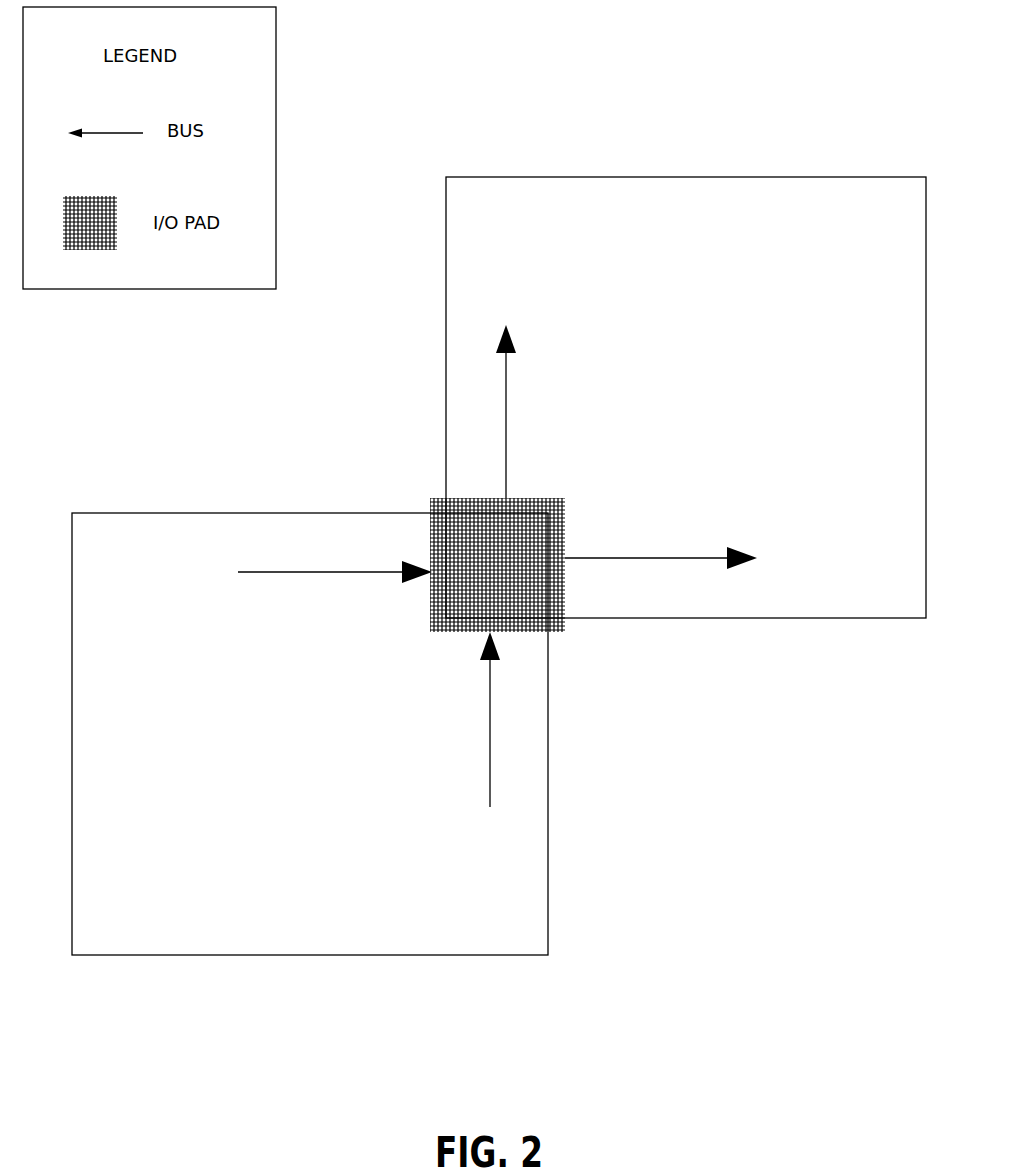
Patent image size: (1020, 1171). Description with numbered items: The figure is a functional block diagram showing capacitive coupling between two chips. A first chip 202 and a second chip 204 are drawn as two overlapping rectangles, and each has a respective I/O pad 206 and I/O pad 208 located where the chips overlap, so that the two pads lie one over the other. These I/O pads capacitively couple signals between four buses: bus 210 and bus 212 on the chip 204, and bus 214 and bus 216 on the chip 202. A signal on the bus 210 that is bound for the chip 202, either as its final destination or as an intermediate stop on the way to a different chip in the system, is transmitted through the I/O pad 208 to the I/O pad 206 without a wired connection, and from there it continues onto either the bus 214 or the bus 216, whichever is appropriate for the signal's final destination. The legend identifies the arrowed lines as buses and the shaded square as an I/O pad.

The chip 202 is at (446, 372).
The chip 204 is at (548, 708).
The I/O pad 206 is at (565, 578).
The I/O pad 208 is at (430, 626).
The bus 210 is at (490, 773).
The bus 212 is at (265, 573).
The bus 214 is at (655, 556).
The bus 216 is at (507, 397).